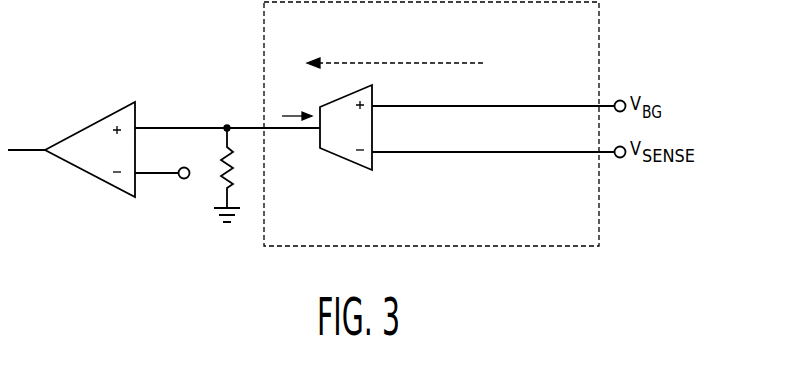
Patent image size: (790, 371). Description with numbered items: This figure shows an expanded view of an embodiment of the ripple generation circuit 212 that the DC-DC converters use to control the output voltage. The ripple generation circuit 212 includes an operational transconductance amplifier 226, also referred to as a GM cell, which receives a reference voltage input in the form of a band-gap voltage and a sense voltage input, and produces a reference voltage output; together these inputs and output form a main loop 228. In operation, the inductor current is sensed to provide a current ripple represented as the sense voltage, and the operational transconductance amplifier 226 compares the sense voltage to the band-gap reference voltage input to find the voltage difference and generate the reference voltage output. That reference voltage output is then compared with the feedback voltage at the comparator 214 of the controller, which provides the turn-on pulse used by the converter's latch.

The ripple generation circuit 212 is at (263, 43).
The comparator 214 is at (102, 117).
The operational transconductance amplifier 226 is at (348, 163).
The main loop 228 is at (447, 63).